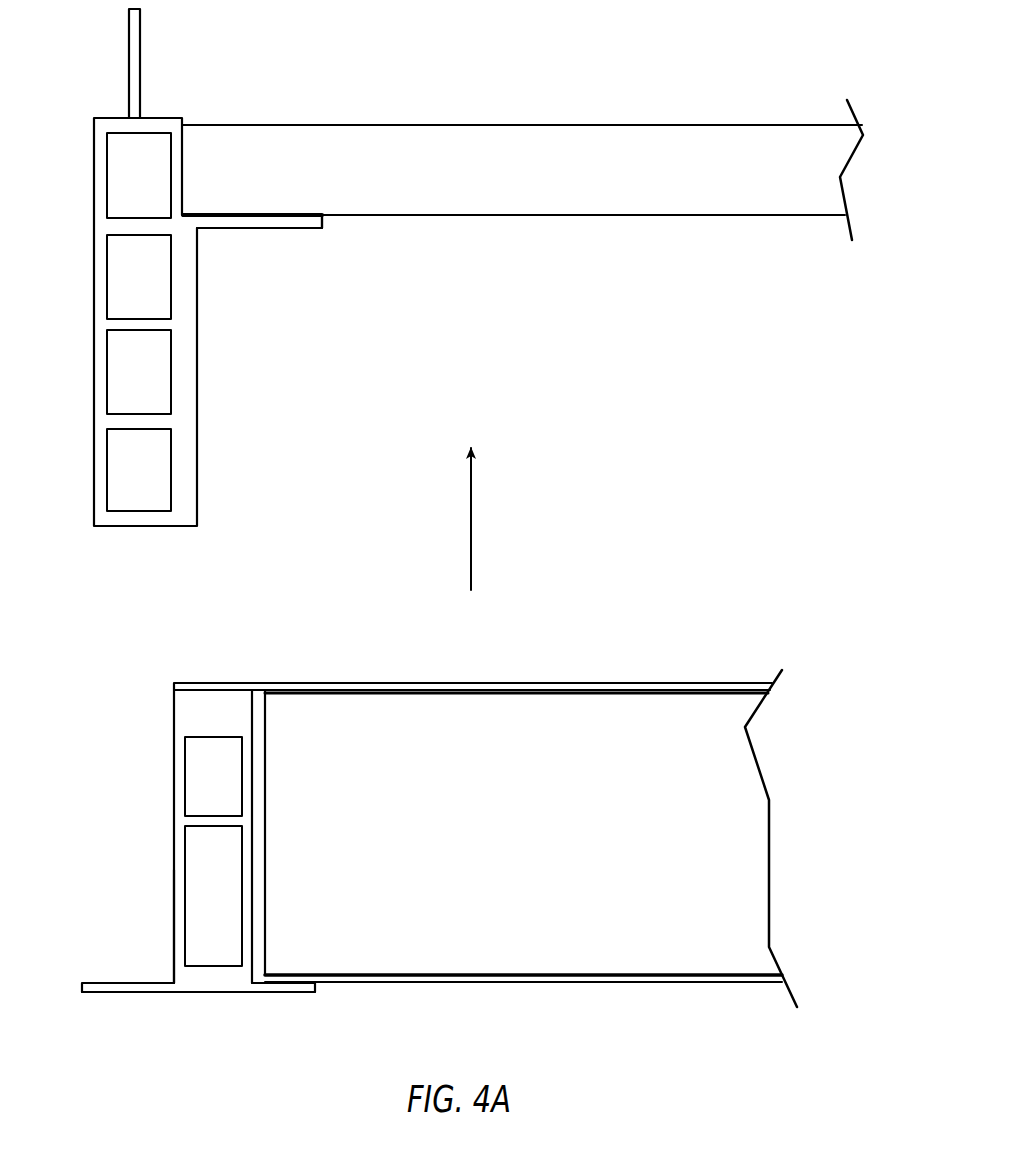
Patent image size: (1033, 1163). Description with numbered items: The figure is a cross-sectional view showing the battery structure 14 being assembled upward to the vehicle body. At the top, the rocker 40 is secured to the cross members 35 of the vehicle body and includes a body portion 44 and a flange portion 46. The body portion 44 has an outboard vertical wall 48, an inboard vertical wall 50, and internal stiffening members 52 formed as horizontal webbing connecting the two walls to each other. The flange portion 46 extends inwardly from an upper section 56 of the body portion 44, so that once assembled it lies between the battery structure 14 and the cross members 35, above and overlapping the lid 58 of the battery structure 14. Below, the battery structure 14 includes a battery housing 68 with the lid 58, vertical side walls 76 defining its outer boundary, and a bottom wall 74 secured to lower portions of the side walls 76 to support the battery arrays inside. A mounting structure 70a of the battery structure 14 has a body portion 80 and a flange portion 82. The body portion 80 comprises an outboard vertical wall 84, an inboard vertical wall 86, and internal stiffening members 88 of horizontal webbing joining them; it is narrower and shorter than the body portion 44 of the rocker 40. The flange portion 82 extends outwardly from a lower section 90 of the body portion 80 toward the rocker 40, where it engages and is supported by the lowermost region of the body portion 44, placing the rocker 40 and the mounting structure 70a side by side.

The battery structure 14 is at (805, 855).
The cross members 35 is at (790, 145).
The rocker 40 is at (63, 288).
The body portion 44 is at (92, 237).
The flange portion 46 is at (297, 220).
The outboard vertical wall 48 is at (100, 461).
The inboard vertical wall 50 is at (183, 375).
The internal stiffening members 52 is at (142, 323).
The upper section 56 is at (220, 213).
The lid 58 is at (585, 692).
The battery housing 68 is at (560, 982).
The mounting structure 70a is at (160, 707).
The bottom wall 74 is at (710, 977).
The side walls 76 is at (257, 772).
The body portion 80 is at (287, 998).
The flange portion 82 is at (103, 987).
The outboard vertical wall 84 is at (178, 764).
The inboard vertical wall 86 is at (245, 902).
The internal stiffening members 88 is at (208, 820).
The lower section 90 is at (168, 987).